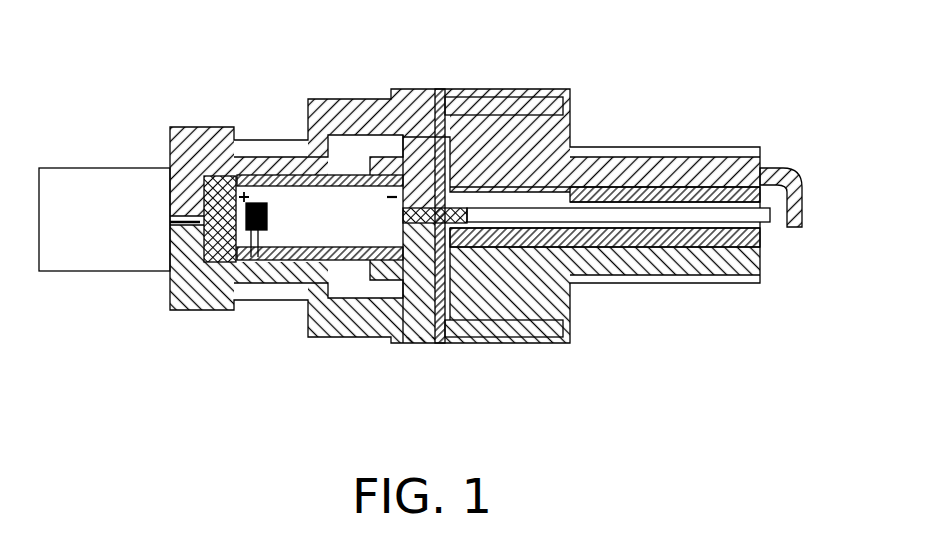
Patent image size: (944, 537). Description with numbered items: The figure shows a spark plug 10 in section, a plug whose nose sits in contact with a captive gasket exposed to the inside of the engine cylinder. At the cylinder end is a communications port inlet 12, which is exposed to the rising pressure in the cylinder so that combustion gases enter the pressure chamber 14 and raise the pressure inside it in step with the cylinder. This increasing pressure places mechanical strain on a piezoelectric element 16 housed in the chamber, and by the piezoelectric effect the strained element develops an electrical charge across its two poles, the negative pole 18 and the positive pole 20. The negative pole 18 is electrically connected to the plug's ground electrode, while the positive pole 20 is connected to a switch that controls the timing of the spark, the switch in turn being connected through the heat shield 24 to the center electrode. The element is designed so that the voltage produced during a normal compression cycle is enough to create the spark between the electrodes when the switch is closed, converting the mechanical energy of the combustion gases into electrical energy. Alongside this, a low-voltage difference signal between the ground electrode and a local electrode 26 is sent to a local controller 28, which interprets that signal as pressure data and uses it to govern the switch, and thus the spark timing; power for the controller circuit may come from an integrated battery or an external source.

The spark plug 10 is at (126, 102).
The communications port inlet 12 is at (750, 203).
The pressure chamber 14 is at (665, 228).
The piezoelectric element 16 is at (328, 227).
The negative pole 18 is at (362, 198).
The positive pole 20 is at (264, 197).
The heat shield 24 is at (453, 220).
The local electrode 26 is at (246, 257).
The local controller 28 is at (95, 216).